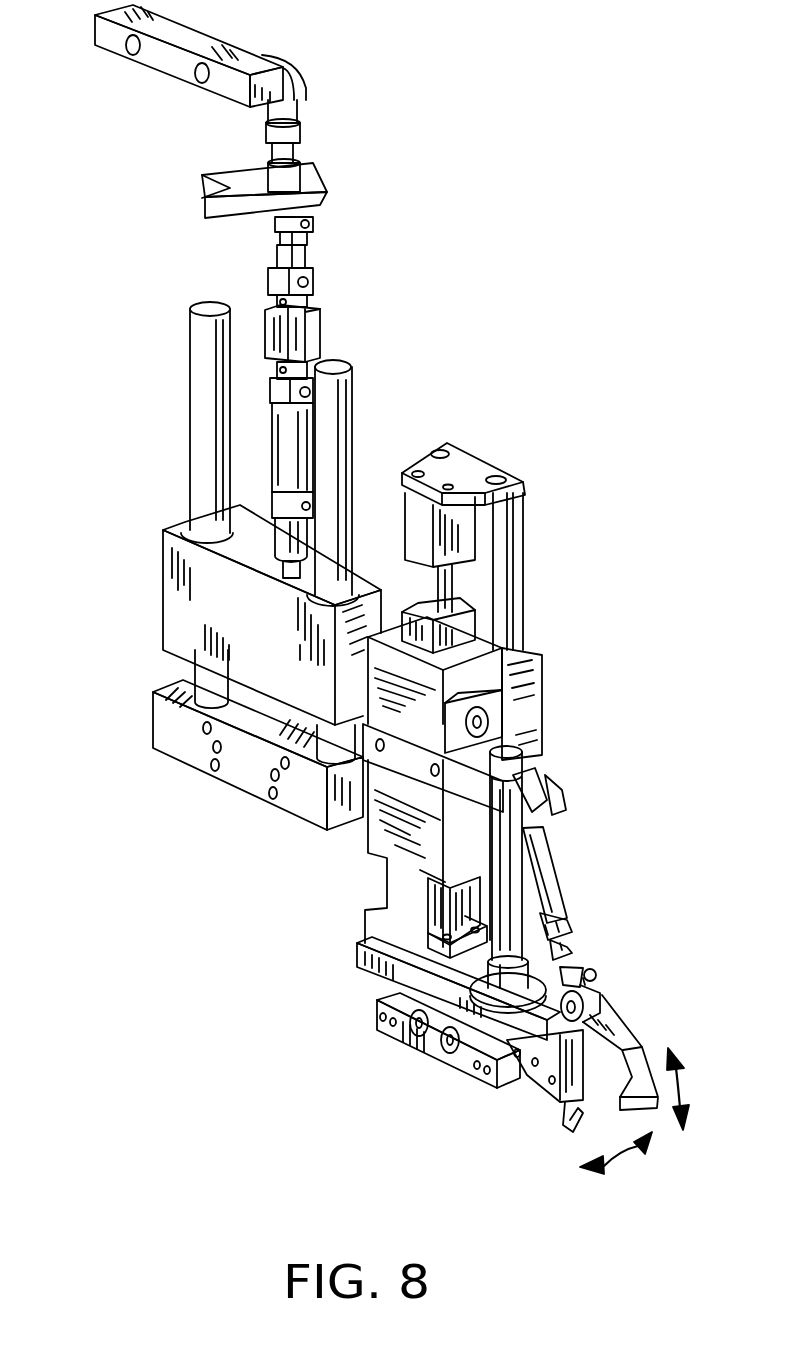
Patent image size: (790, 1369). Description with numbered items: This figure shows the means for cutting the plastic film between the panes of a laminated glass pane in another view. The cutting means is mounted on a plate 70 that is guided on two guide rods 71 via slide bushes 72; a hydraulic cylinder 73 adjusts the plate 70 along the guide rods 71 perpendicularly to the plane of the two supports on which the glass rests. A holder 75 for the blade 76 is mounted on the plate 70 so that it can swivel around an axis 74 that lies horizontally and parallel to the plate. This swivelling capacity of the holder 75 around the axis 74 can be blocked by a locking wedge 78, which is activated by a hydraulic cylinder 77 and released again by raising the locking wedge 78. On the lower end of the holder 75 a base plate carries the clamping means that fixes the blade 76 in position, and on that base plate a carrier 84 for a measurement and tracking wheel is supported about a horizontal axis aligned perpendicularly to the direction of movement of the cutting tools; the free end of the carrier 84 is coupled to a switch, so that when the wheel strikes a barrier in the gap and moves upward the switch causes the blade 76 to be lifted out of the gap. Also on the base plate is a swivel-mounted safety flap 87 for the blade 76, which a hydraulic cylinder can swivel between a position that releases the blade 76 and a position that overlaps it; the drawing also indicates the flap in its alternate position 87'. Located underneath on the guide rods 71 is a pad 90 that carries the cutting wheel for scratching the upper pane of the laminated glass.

The plate 70 is at (200, 618).
The guide rods 71 is at (210, 362).
The slide bushes 72 is at (165, 532).
The hydraulic cylinder 73 is at (300, 332).
The axis 74 is at (490, 720).
The holder 75 is at (405, 815).
The blade 76 is at (568, 1113).
The hydraulic cylinder 77 is at (455, 540).
The locking wedge 78 is at (463, 628).
The carrier 84 is at (432, 1040).
The safety flap 87 is at (583, 924).
The lever arm 87' is at (622, 1002).
The pad 90 is at (244, 772).